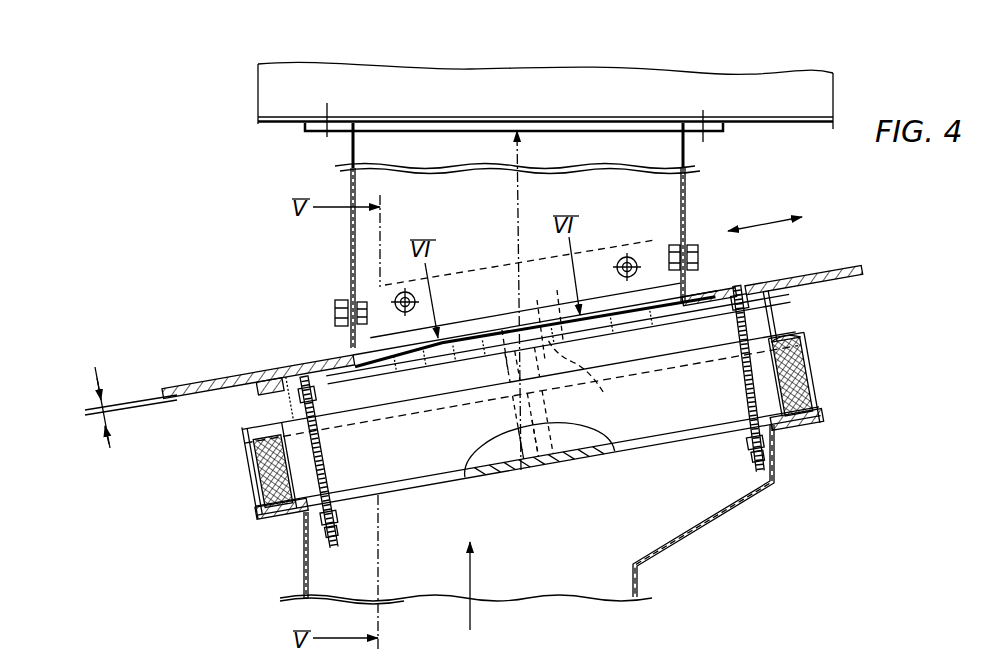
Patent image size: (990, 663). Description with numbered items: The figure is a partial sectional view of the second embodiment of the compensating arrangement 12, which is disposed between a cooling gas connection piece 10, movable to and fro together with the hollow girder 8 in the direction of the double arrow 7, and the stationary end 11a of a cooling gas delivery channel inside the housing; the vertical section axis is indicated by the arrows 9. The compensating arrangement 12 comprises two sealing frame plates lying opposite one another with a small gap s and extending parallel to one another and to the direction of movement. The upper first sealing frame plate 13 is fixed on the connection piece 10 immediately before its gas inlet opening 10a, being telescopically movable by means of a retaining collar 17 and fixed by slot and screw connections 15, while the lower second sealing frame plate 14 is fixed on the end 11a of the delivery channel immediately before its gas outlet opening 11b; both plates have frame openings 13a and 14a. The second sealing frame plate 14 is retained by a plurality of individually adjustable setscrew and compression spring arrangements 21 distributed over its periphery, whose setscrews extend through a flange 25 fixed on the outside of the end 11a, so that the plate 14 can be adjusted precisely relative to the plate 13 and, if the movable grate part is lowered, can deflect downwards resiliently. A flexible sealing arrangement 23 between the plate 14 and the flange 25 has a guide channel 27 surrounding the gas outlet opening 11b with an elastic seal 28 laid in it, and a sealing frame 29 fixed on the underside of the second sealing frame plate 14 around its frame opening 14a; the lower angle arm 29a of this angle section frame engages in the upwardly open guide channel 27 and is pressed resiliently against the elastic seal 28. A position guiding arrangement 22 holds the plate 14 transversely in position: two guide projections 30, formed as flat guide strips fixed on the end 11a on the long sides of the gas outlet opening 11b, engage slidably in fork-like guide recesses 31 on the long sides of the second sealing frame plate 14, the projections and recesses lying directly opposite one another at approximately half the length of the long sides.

The double arrow 7 is at (771, 223).
The hollow girder 8 is at (285, 127).
The axis of section 9 is at (520, 185).
The cooling gas connection piece 10 is at (665, 200).
The gas inlet opening 10a is at (385, 340).
The end of the delivery channel 11a is at (330, 590).
The gas outlet opening 11b is at (308, 522).
The compensating arrangement 12 is at (253, 352).
The first sealing frame plate 13 is at (818, 272).
The frame opening 13a is at (655, 270).
The second sealing frame plate 14 is at (797, 302).
The frame opening 14a is at (742, 283).
The slot and screw connections 15 is at (330, 316).
The retaining collar 17 is at (340, 297).
The setscrew and compression spring arrangement 21 is at (335, 452).
The position guiding arrangement 22 is at (505, 452).
The flexible sealing arrangement 23 is at (248, 478).
The flange 25 is at (808, 425).
The guide channel 27 is at (812, 373).
The elastic seal 28 is at (808, 395).
The sealing frame 29 is at (778, 322).
The lower angle arm 29a is at (800, 345).
The guide projection 30 is at (578, 455).
The guide recess 31 is at (590, 392).
The gap s is at (128, 411).